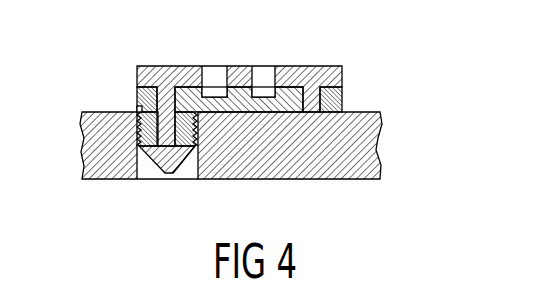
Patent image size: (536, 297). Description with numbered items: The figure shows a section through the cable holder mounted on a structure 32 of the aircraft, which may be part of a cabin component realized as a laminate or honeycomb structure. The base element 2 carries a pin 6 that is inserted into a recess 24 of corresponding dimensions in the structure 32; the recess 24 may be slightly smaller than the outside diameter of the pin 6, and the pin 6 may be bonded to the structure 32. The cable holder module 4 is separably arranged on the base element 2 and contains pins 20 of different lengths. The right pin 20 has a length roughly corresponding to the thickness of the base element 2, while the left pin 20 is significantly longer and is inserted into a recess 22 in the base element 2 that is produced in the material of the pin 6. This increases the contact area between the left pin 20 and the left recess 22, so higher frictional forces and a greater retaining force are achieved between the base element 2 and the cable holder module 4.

The base element 2 is at (216, 108).
The cable holder module 4 is at (336, 75).
The pin 6 is at (150, 166).
The pin 20 is at (143, 97).
The recess 22 is at (194, 87).
The recess 24 is at (183, 170).
The structure 32 is at (368, 145).